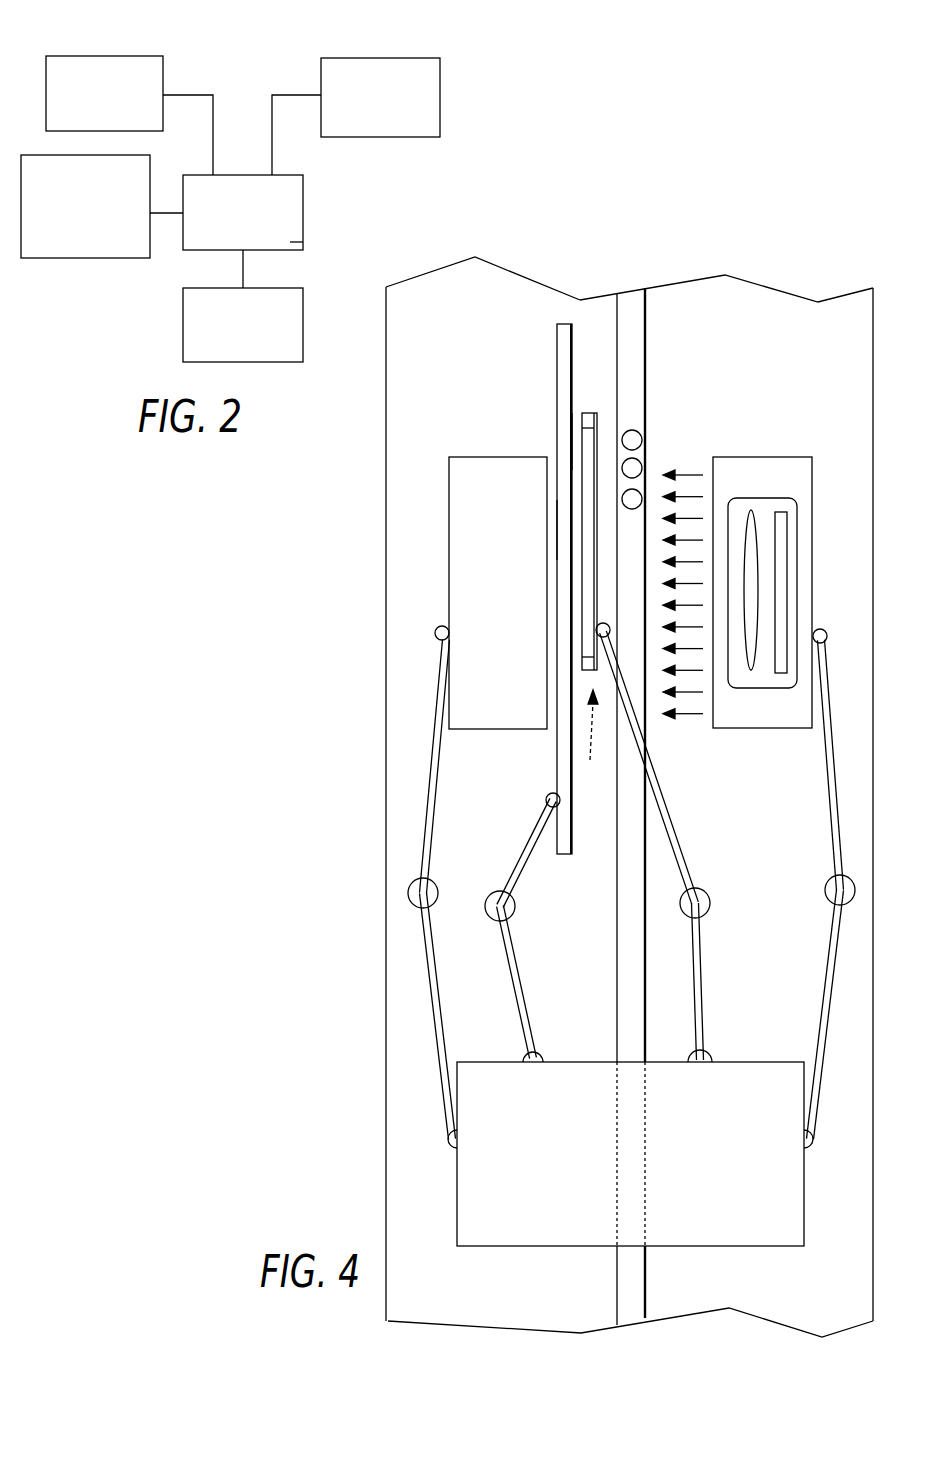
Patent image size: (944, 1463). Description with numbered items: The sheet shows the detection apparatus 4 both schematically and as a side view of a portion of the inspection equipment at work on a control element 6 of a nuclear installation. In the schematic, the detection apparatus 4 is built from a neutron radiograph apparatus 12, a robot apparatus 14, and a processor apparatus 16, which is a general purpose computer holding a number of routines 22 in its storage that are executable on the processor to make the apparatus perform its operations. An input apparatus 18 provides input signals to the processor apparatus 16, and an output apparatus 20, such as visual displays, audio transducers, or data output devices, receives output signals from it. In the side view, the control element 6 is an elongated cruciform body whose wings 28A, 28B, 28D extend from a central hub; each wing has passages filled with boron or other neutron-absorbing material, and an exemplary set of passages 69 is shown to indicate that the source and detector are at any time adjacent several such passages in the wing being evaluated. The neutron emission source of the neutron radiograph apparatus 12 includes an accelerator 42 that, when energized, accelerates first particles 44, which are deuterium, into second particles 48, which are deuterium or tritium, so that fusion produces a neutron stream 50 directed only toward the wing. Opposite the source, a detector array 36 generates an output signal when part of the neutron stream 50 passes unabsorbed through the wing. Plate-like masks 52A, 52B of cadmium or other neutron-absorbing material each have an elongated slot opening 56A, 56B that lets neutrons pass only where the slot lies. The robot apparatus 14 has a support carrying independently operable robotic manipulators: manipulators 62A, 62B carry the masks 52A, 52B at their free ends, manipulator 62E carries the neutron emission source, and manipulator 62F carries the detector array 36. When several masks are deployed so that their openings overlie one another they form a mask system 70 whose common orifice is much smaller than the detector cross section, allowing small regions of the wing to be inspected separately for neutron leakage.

In FIG. 2, the detection apparatus 4 is at (413, 163).
In FIG. 4, the detection apparatus 4 is at (418, 713).
In FIG. 4, the control element 6 is at (386, 507).
In FIG. 2, the neutron radiograph apparatus 12 is at (68, 262).
In FIG. 4, the neutron radiograph apparatus 12 is at (780, 550).
In FIG. 2, the robot apparatus 14 is at (183, 315).
In FIG. 4, the robot apparatus 14 is at (455, 1178).
In FIG. 2, the processor apparatus 16 is at (303, 186).
In FIG. 2, the input apparatus 18 is at (110, 57).
In FIG. 2, the output apparatus 20 is at (440, 82).
In FIG. 2, the routines 22 is at (290, 242).
In FIG. 4, the wing 28A is at (645, 318).
In FIG. 4, the wing 28B is at (488, 282).
In FIG. 4, the wing 28D is at (765, 303).
In FIG. 4, the detector array 36 is at (490, 456).
In FIG. 4, the accelerator 42 is at (787, 525).
In FIG. 4, the first particles 44 is at (762, 512).
In FIG. 4, the second particles 48 is at (751, 662).
In FIG. 4, the neutron stream 50 is at (695, 468).
In FIG. 4, the mask 52A is at (600, 410).
In FIG. 4, the mask 52B is at (556, 345).
In FIG. 4, the opening 56A is at (570, 443).
In FIG. 4, the opening 56B is at (552, 518).
In FIG. 4, the manipulator 62A is at (704, 967).
In FIG. 4, the manipulator 62B is at (523, 970).
In FIG. 4, the manipulator 62E is at (826, 780).
In FIG. 4, the manipulator 62F is at (438, 965).
In FIG. 4, the passages 69 is at (639, 495).
In FIG. 4, the mask system 70 is at (591, 741).